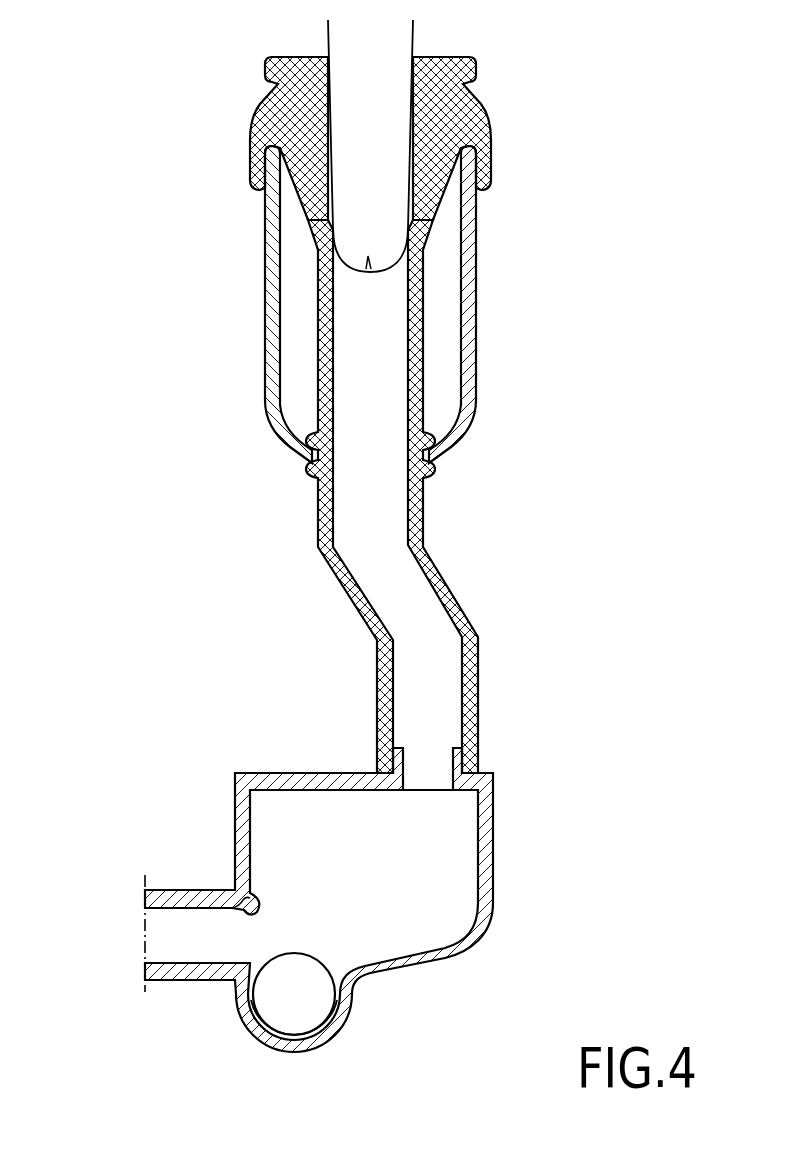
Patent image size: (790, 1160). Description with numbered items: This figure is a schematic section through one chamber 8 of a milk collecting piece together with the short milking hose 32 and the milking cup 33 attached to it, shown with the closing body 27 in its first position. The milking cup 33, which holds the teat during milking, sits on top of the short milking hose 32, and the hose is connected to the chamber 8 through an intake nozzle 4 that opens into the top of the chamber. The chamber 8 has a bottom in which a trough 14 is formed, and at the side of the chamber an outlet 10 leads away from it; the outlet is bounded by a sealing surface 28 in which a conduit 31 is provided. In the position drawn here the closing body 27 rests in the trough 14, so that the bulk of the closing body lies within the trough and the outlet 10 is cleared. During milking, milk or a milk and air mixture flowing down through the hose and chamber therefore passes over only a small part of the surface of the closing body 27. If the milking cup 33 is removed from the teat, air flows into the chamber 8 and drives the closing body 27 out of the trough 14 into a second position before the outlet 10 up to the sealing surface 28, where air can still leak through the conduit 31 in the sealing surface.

The intake nozzle 4 is at (477, 720).
The chamber 8 is at (393, 891).
The outlet 10 is at (182, 932).
The trough 14 is at (327, 1032).
The closing body 27 is at (298, 995).
The sealing surface 28 is at (228, 890).
The conduit 31 is at (227, 897).
The short milking hose 32 is at (448, 583).
The milking cup 33 is at (470, 134).